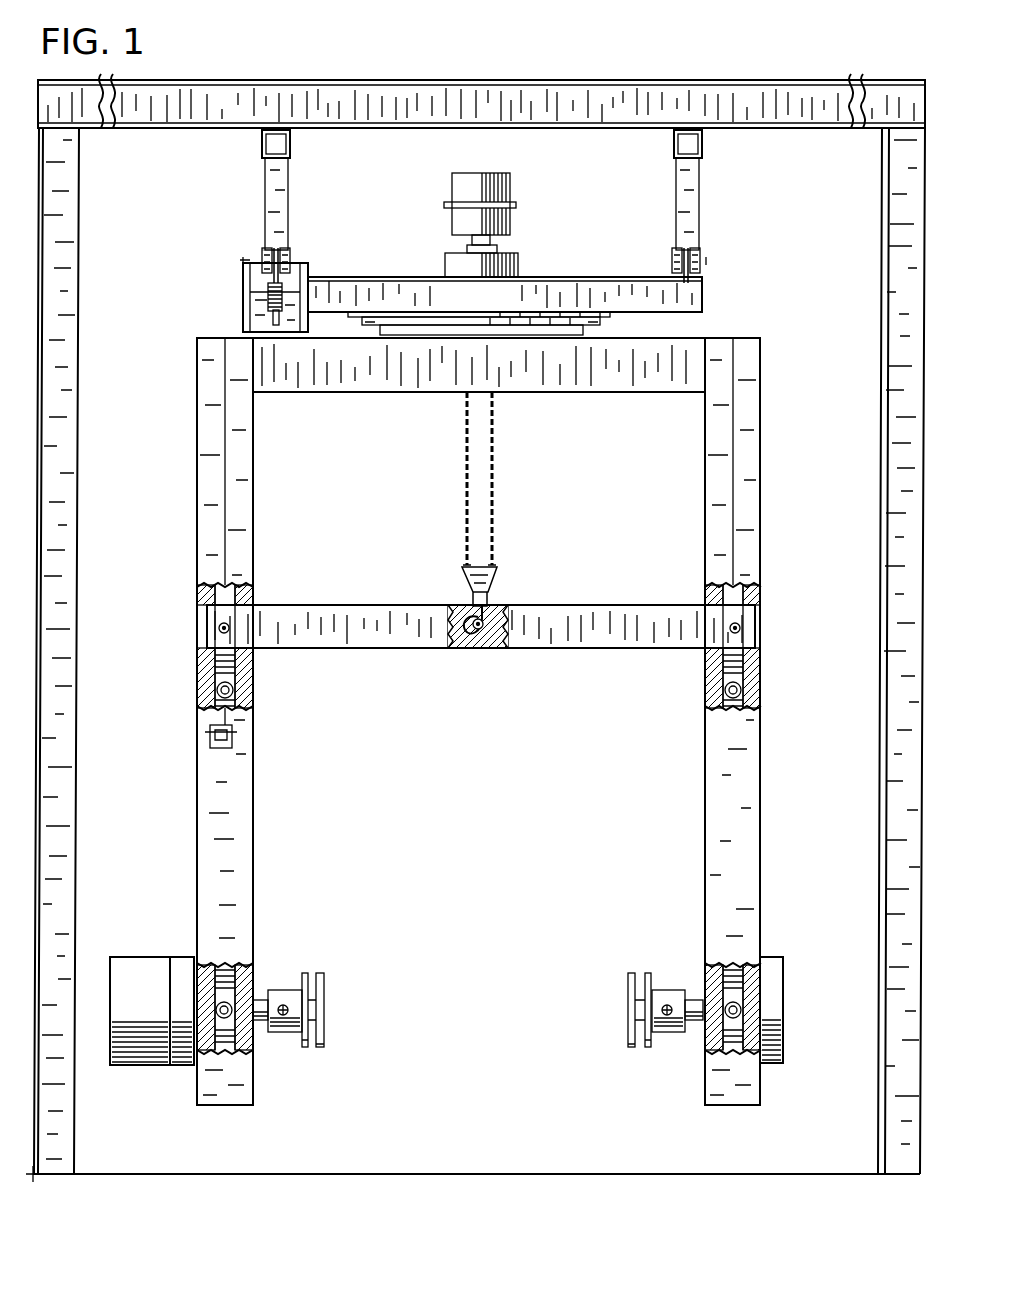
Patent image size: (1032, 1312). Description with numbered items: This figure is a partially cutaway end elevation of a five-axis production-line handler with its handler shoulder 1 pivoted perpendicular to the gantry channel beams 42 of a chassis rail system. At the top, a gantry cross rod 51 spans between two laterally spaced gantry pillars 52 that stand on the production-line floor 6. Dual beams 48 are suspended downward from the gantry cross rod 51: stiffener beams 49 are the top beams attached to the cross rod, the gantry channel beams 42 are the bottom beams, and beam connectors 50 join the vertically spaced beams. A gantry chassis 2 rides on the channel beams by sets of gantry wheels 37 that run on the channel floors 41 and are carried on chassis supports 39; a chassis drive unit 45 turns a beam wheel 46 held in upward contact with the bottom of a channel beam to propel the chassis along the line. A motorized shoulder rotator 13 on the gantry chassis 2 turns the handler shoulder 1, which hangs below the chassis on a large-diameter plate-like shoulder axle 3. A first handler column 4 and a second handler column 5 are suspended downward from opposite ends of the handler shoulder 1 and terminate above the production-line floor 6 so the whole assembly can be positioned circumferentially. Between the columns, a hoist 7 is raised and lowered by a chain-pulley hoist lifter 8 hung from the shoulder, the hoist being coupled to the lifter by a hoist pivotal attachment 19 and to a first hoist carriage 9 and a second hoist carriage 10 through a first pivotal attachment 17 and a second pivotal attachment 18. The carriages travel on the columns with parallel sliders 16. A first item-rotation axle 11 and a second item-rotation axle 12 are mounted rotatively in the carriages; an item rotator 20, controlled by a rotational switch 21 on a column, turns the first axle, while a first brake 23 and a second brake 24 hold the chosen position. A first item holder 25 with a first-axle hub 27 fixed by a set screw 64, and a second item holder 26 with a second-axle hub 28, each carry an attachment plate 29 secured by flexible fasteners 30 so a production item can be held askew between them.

The handler shoulder 1 is at (385, 370).
The gantry chassis 2 is at (625, 295).
The shoulder axle 3 is at (590, 330).
The first handler column 4 is at (255, 790).
The second handler column 5 is at (710, 790).
The production-line floor 6 is at (500, 1174).
The hoist 7 is at (400, 605).
The hoist lifter 8 is at (497, 565).
The first hoist carriage 9 is at (240, 690).
The second hoist carriage 10 is at (722, 690).
The first item-rotation axle 11 is at (258, 1022).
The second item-rotation axle 12 is at (695, 1022).
The motorized shoulder rotator 13 is at (500, 250).
The parallel sliders 16 is at (238, 690).
The first pivotal attachment 17 is at (219, 629).
The second pivotal attachment 18 is at (740, 629).
The hoist pivotal attachment 19 is at (477, 640).
The item rotator 20 is at (135, 995).
The rotational switch 21 is at (210, 738).
The first brake 23 is at (185, 970).
The second brake 24 is at (775, 968).
The first item holder 25 is at (305, 975).
The second item holder 26 is at (633, 975).
The first-axle hub 27 is at (285, 990).
The second-axle hub 28 is at (668, 990).
The attachment plate 29 is at (320, 972).
The flexible fasteners 30 is at (320, 1042).
The gantry wheels 37 is at (285, 250).
The chassis supports 39 is at (268, 266).
The channel floors 41 is at (280, 275).
The gantry channel beams 42 is at (244, 261).
The chassis drive unit 45 is at (243, 300).
The beam wheel 46 is at (290, 275).
The dual beams 48 is at (240, 180).
The stiffener beams 49 is at (290, 134).
The beam connectors 50 is at (283, 192).
The gantry cross rods 51 is at (530, 82).
The gantry pillars 52 is at (60, 524).
The set screw 64 is at (288, 1010).